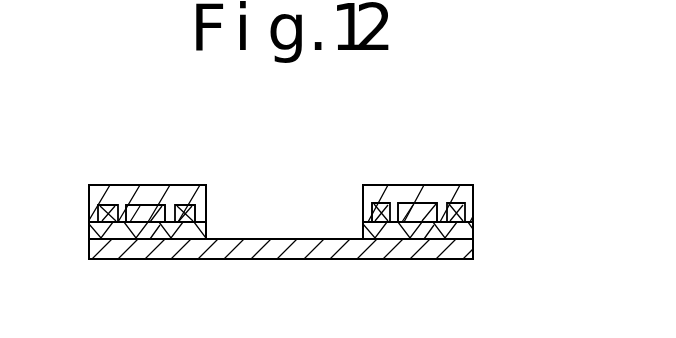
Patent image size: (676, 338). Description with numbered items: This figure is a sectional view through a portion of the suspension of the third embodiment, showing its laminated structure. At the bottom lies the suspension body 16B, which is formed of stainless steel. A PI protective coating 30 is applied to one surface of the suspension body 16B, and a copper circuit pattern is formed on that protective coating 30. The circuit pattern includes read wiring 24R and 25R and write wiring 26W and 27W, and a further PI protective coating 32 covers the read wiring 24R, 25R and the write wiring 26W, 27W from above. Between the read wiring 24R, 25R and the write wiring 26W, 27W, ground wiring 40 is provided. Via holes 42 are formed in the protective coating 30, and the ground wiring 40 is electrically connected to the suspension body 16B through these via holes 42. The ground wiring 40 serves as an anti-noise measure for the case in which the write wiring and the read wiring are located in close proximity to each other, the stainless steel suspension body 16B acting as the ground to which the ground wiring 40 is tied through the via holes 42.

The suspension body 16B is at (458, 249).
The protective coating 30 is at (470, 233).
The protective coating 32 is at (458, 186).
The write wiring 26W is at (110, 192).
The write wiring 27W is at (482, 203).
The read wiring 24R is at (190, 190).
The read wiring 25R is at (377, 204).
The ground wiring 40 is at (147, 206).
The via holes 42 is at (150, 240).